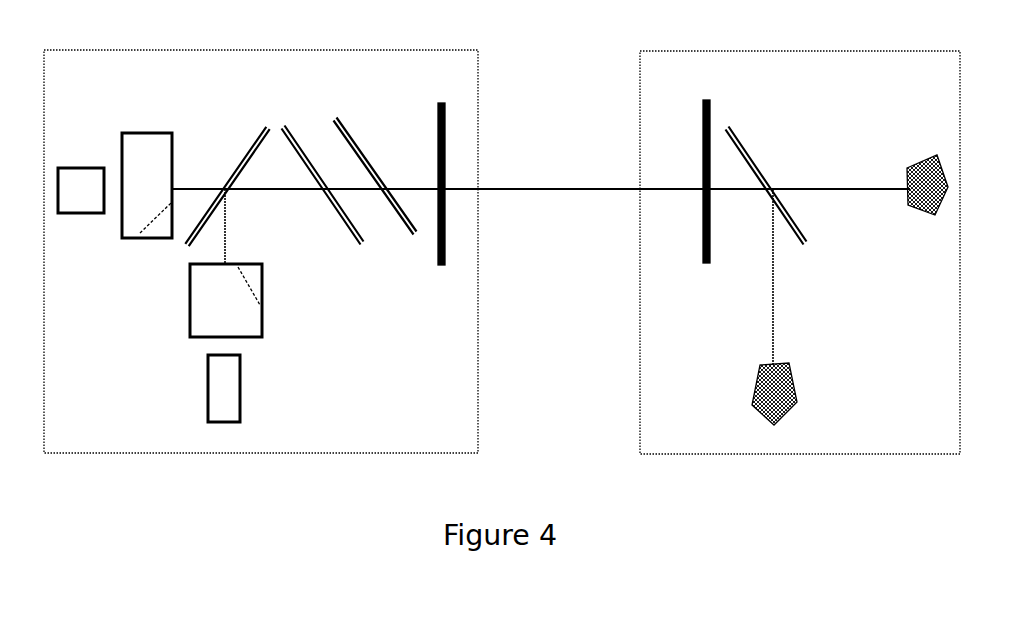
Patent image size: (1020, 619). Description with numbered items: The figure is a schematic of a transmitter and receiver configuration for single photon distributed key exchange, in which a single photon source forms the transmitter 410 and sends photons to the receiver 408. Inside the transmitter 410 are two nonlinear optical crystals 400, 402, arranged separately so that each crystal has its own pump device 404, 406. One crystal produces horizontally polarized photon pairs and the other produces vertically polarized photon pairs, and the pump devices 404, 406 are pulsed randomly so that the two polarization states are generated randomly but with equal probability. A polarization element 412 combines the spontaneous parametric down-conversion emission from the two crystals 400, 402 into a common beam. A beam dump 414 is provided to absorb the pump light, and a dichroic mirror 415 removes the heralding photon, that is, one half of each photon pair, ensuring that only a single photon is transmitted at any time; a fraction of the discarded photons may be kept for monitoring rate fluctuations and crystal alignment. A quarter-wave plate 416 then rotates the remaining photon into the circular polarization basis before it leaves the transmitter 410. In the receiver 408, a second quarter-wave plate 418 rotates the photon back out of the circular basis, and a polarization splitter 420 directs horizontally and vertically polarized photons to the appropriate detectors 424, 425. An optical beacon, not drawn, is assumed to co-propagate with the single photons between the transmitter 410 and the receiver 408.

The nonlinear optical crystal 400 is at (128, 238).
The nonlinear optical crystal 402 is at (196, 326).
The pump device 404 is at (65, 213).
The pump device 406 is at (242, 394).
The receiver 408 is at (837, 51).
The transmitter 410 is at (325, 50).
The polarization element 412 is at (235, 173).
The beam dump 414 is at (338, 217).
The dichroic mirror 415 is at (413, 233).
The quarter-wave plate 416 is at (445, 133).
The quarter-wave plate 418 is at (702, 143).
The polarization splitter 420 is at (810, 234).
The detector 424 is at (759, 387).
The detector 425 is at (928, 158).